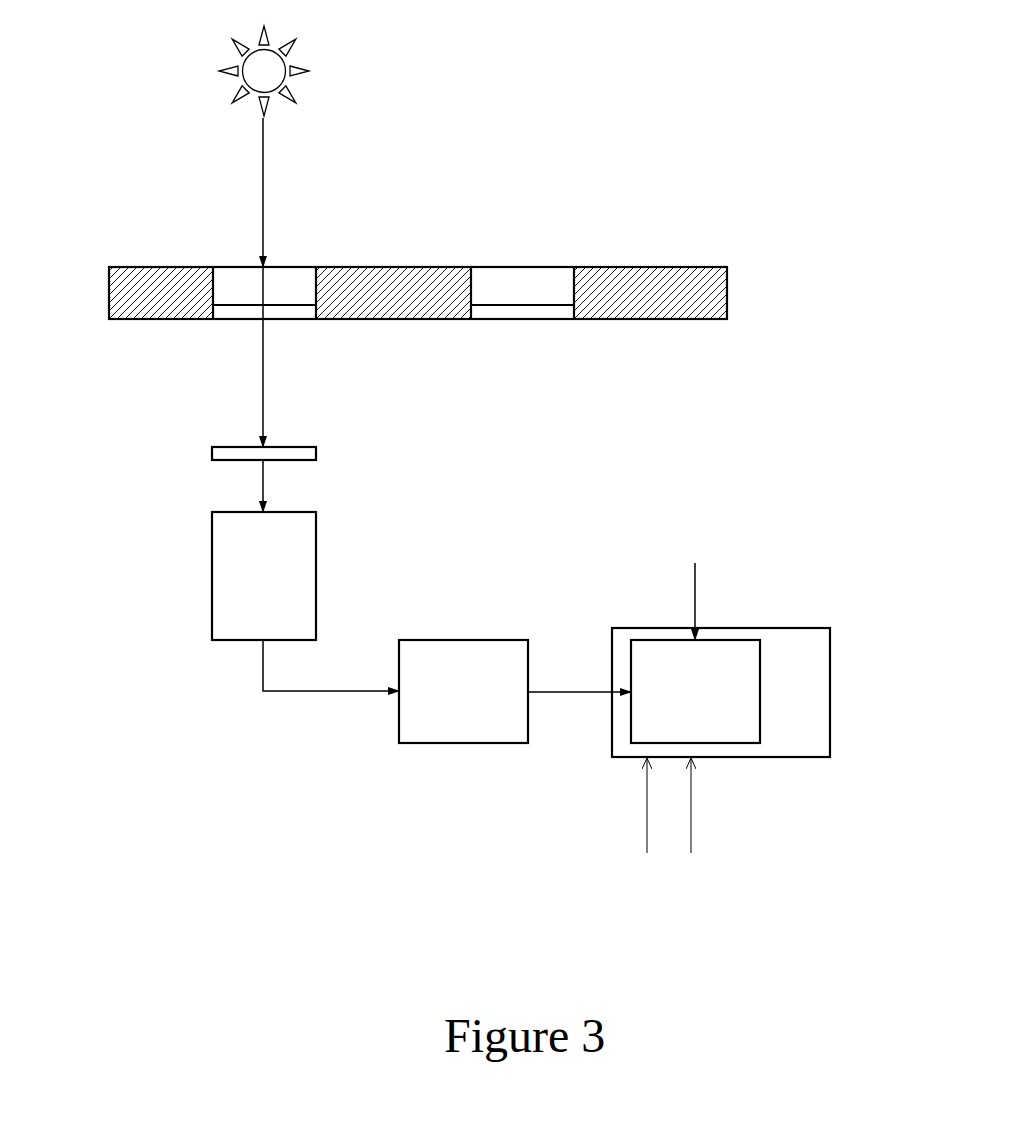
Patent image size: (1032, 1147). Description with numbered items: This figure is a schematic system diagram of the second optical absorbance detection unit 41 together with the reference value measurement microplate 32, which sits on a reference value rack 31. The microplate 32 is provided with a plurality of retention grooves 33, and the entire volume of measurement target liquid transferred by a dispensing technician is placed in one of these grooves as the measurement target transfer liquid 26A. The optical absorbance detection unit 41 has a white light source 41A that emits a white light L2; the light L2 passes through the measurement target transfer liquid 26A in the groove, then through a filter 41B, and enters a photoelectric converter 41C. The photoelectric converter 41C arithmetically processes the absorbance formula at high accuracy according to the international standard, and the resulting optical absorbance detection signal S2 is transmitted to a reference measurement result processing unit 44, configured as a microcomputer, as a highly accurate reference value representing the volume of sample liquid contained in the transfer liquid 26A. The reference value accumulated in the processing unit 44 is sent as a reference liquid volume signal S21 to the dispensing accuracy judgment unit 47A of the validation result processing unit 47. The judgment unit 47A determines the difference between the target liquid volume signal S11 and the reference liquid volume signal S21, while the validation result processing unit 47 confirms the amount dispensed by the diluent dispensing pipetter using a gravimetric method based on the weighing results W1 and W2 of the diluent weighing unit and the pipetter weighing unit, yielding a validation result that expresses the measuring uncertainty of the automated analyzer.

The white light source 41A is at (275, 77).
The white light L2 is at (263, 185).
The reference value measurement microplate 32 is at (390, 210).
The reference value rack 31 is at (109, 291).
The measurement target transfer liquid 26A is at (284, 279).
The retention grooves 33 is at (331, 267).
The second optical absorbance detection unit 41 is at (238, 528).
The filter 41B is at (311, 446).
The photoelectric converter 41C is at (318, 548).
The optical absorbance detection signal S2 is at (278, 694).
The reference measurement result processing unit 44 is at (460, 745).
The reference liquid volume signal S21 is at (580, 688).
The validation result processing unit 47 is at (752, 717).
The dispensing accuracy judgment unit 47A is at (728, 744).
The target liquid volume signal S11 is at (697, 583).
The weighing result of the diluent weighing unit W1 is at (641, 820).
The weighing result of the pipetter weighing unit W2 is at (699, 820).